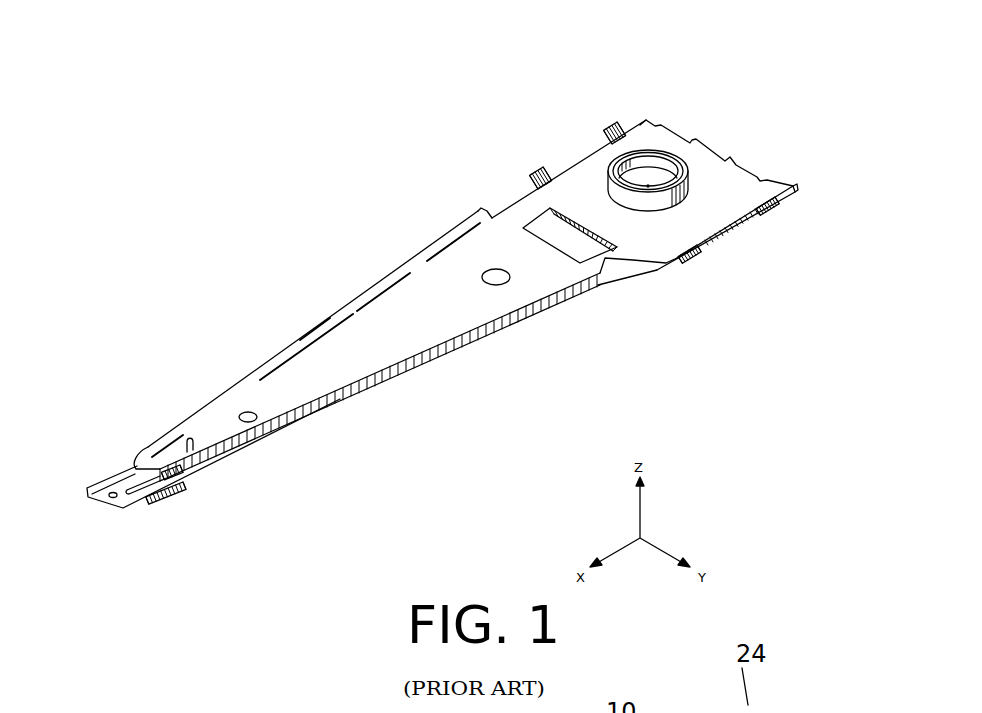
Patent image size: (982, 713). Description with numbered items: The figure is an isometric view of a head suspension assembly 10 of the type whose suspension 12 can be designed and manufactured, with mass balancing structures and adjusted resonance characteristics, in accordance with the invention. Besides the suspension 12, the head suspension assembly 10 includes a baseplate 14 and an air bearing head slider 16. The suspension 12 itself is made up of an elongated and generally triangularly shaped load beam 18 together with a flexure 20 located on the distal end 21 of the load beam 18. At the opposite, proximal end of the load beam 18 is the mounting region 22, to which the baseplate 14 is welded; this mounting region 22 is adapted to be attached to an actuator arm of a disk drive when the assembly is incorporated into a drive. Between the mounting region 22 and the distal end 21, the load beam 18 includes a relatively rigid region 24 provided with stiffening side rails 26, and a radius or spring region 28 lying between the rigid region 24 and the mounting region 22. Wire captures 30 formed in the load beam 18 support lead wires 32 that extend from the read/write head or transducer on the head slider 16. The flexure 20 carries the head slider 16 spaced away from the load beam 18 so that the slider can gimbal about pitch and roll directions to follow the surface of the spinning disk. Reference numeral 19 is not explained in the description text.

The head suspension assembly 10 is at (307, 267).
The suspension 12 is at (545, 324).
The baseplate 14 is at (710, 230).
The air bearing head slider 16 is at (183, 484).
The load beam 18 is at (433, 326).
The planar surface of load beam 19 is at (428, 295).
The flexure 20 is at (125, 511).
The distal end 21 is at (150, 437).
The mounting region 22 is at (597, 170).
The rigid region 24 is at (277, 401).
The stiffening side rails 26 is at (218, 397).
The spring region 28 is at (603, 257).
The wire captures 30 is at (760, 210).
The lead wires 32 is at (788, 186).